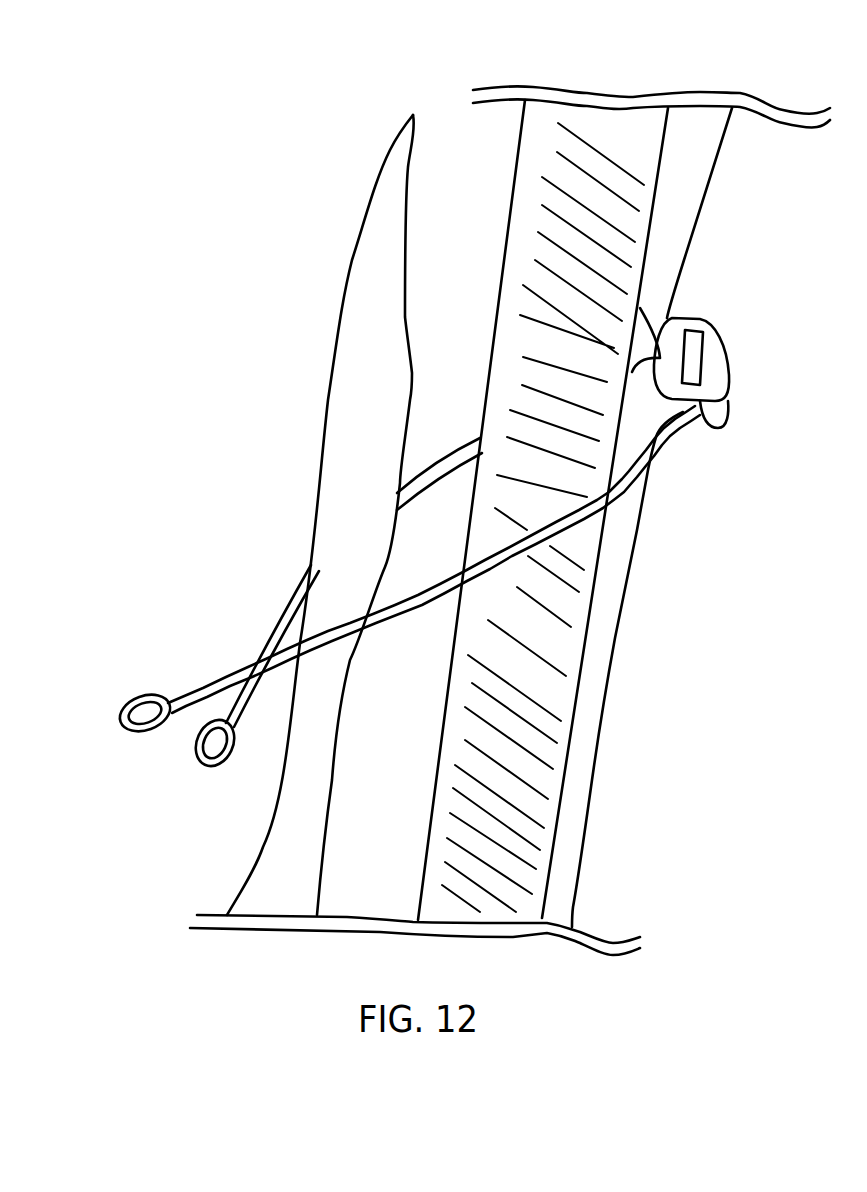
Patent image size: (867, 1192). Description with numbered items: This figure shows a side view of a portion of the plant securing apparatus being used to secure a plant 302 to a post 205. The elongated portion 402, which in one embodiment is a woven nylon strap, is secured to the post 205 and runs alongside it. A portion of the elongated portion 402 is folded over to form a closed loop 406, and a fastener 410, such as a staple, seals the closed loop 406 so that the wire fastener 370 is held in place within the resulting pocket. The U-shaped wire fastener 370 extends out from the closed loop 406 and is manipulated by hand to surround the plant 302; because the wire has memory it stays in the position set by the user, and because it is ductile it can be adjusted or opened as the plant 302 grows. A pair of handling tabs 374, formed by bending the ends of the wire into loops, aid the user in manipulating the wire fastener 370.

The post 205 is at (618, 133).
The plant 302 is at (358, 443).
The wire fastener 370 is at (247, 627).
The handling tabs 374 is at (127, 707).
The elongated portion 402 is at (620, 542).
The closed loop 406 is at (711, 412).
The fastener 410 is at (700, 328).